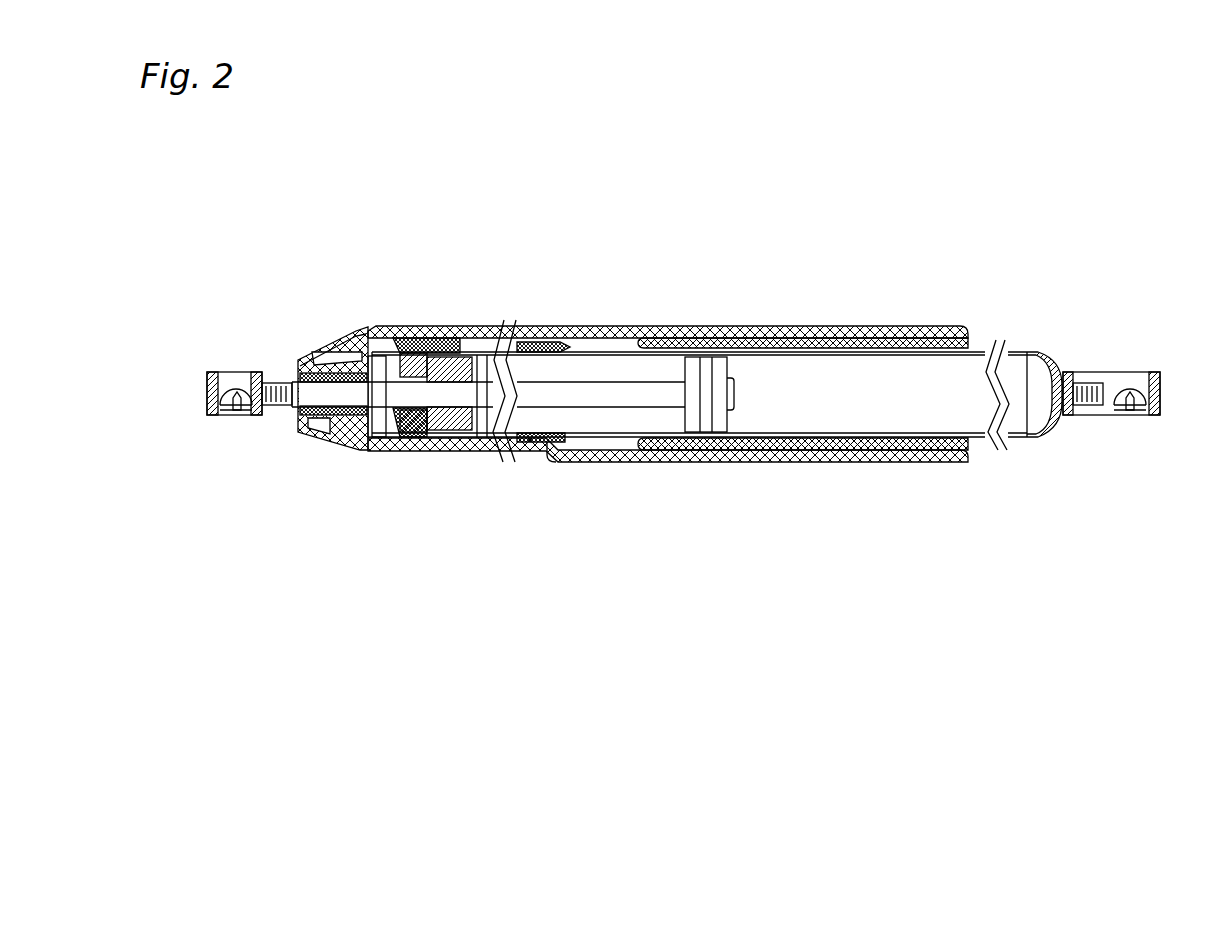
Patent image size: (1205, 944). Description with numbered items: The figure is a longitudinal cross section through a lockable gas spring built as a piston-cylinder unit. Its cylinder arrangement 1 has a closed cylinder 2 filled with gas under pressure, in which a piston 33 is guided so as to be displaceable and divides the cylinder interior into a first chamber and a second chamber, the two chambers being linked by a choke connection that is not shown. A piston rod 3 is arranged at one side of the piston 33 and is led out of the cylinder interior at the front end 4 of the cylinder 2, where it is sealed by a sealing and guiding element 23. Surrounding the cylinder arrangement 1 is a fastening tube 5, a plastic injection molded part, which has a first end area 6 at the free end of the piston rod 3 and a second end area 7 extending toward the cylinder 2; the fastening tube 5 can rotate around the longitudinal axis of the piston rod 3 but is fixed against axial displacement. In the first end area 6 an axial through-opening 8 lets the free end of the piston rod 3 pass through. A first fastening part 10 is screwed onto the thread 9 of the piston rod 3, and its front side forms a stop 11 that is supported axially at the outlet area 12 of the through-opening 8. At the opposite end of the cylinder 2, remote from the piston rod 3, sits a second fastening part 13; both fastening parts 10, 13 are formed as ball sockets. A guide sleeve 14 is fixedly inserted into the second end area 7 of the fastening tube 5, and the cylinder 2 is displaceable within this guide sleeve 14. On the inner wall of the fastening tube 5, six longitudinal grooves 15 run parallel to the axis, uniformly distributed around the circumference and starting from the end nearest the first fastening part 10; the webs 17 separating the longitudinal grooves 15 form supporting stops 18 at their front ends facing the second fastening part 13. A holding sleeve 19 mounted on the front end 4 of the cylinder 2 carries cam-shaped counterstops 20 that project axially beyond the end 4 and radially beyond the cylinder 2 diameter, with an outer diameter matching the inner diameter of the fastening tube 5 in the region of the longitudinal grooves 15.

The cylinder arrangement 1 is at (1020, 312).
The cylinder 2 is at (946, 450).
The piston rod 3 is at (389, 400).
The front end 4 is at (430, 430).
The fastening tube 5 is at (680, 325).
The first end area 6 is at (332, 345).
The second end area 7 is at (950, 326).
The axial through-opening 8 is at (312, 432).
The thread 9 is at (270, 372).
The first fastening part 10 is at (208, 418).
The stop 11 is at (294, 418).
The outlet area 12 is at (297, 360).
The second fastening part 13 is at (1157, 416).
The guide sleeve 14 is at (910, 458).
The longitudinal grooves 15 is at (494, 322).
The webs 17 is at (522, 450).
The supporting stops 18 is at (560, 458).
The holding sleeve 19 is at (452, 325).
The counterstops 20 is at (396, 327).
The sealing and guiding element 23 is at (443, 440).
The piston 33 is at (717, 422).